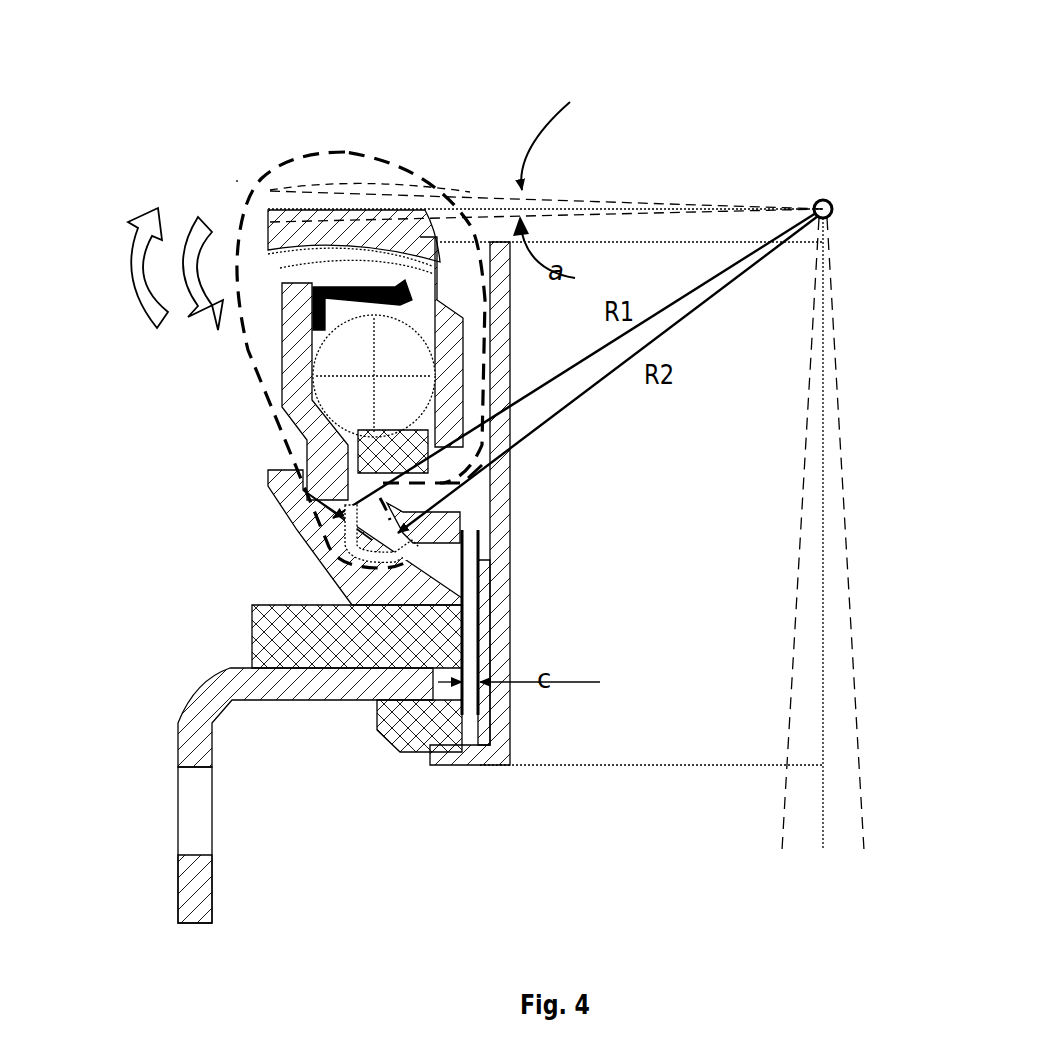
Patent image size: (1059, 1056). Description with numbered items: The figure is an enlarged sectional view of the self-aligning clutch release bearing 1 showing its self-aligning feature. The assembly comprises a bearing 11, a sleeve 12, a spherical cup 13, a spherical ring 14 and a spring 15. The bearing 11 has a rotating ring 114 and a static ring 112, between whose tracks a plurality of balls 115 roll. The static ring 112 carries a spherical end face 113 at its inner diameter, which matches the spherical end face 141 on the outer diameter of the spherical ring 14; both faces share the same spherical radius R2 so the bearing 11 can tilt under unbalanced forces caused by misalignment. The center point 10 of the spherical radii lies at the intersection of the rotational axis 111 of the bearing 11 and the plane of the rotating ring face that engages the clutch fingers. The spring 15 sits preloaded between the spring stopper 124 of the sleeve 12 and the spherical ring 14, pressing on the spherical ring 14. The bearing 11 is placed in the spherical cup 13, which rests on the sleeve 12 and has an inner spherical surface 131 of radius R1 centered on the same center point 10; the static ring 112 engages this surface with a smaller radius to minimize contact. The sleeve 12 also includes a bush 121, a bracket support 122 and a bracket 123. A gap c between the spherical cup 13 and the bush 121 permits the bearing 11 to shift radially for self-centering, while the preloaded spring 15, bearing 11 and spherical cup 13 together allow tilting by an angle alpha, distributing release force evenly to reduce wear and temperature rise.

The self-aligning clutch release bearing 1 is at (200, 432).
The center point 10 is at (830, 197).
The bearing 11 is at (322, 147).
The sleeve 12 is at (253, 764).
The spherical cup 13 is at (287, 526).
The spherical ring 14 is at (450, 522).
The spring 15 is at (458, 493).
The rotational axis 111 is at (856, 714).
The static ring 112 is at (296, 398).
The spherical end face 113 is at (380, 522).
The rotating ring 114 is at (308, 230).
The balls 115 is at (392, 348).
The bush 121 is at (504, 750).
The bracket support 122 is at (418, 740).
The bracket 123 is at (200, 738).
The spring stopper 124 is at (481, 483).
The spherical surface 131 is at (316, 512).
The spherical end face 141 is at (402, 541).